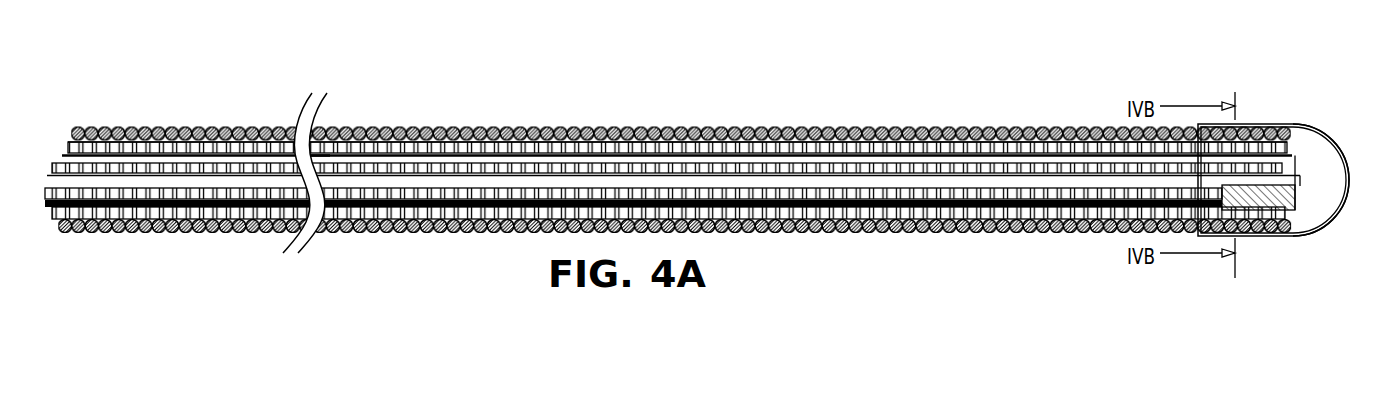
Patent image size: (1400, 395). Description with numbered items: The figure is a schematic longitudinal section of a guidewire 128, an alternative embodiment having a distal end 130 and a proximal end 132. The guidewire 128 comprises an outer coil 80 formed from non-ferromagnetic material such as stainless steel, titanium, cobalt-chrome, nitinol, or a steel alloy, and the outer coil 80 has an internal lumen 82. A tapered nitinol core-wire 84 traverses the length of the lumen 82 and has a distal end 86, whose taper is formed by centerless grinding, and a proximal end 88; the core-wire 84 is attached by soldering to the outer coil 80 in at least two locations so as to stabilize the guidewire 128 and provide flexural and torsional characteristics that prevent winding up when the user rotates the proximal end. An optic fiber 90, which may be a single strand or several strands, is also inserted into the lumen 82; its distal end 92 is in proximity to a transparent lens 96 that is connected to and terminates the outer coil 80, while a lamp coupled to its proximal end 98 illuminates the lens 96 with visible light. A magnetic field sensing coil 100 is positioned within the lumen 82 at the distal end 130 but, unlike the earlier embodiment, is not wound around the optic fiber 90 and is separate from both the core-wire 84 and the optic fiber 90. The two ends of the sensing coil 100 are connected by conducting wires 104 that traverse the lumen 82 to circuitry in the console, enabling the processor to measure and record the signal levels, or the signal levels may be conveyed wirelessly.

The outer coil 80 is at (412, 128).
The internal lumen 82 is at (513, 152).
The tapered nitinol core-wire 84 is at (865, 187).
The distal end of core-wire 86 is at (1305, 178).
The proximal end of core-wire 88 is at (50, 178).
The optic fiber 90 is at (712, 157).
The distal end of optic fiber 92 is at (1295, 150).
The transparent lens 96 is at (1348, 168).
The proximal end of optic fiber 98 is at (65, 157).
The magnetic field sensing coil 100 is at (1258, 237).
The conducting wires 104 is at (997, 237).
The guidewire 128 is at (217, 140).
The distal end of guidewire 130 is at (1339, 212).
The proximal end of guidewire 132 is at (130, 127).